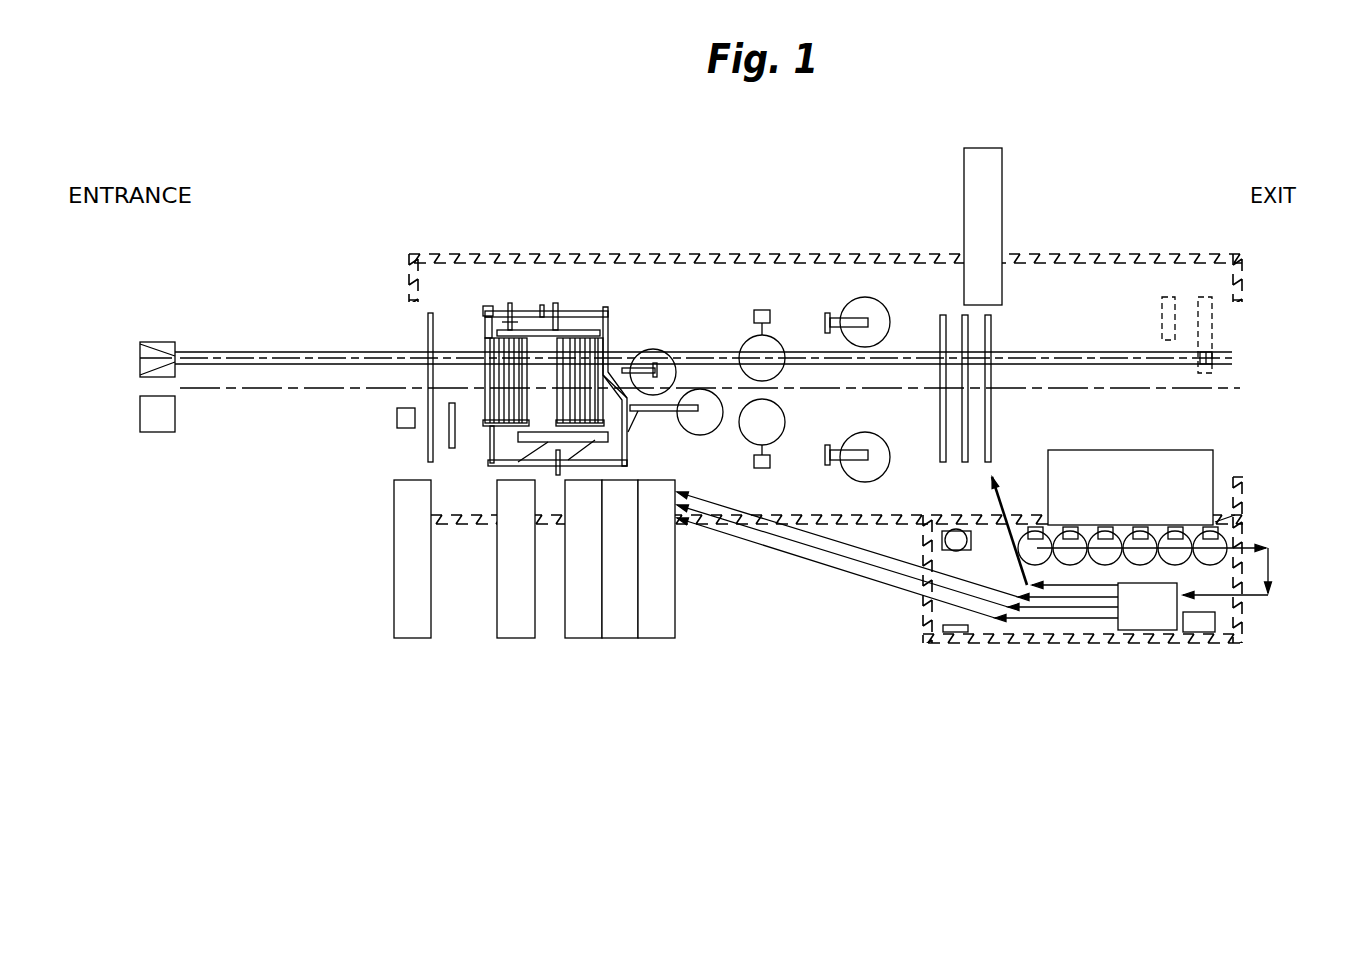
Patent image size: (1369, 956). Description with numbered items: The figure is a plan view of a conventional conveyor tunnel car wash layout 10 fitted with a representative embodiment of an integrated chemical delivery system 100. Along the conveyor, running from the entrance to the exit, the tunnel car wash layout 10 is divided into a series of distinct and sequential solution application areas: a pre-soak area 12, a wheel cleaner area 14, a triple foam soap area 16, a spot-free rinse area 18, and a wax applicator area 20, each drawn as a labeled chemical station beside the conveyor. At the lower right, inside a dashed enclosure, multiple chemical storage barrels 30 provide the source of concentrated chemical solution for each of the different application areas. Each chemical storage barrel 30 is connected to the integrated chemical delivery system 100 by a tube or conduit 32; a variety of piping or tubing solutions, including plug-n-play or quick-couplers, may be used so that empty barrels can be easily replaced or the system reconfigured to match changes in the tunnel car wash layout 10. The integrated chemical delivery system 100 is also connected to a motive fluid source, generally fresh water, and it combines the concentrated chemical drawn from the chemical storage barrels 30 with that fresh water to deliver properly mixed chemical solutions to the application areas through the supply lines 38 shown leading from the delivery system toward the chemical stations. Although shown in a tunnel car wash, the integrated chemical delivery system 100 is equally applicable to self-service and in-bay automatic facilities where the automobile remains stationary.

The tunnel car wash layout 10 is at (255, 573).
The pre-soak area 12 is at (412, 645).
The wheel cleaner area 14 is at (518, 652).
The triple foam soap area 16 is at (622, 645).
The spot-free rinse area 18 is at (955, 305).
The wax applicator area 20 is at (999, 138).
The chemical storage barrels 30 is at (1218, 515).
The conduit 32 is at (1272, 567).
The chemical supply lines 38 is at (1010, 497).
The integrated chemical delivery system 100 is at (1142, 616).